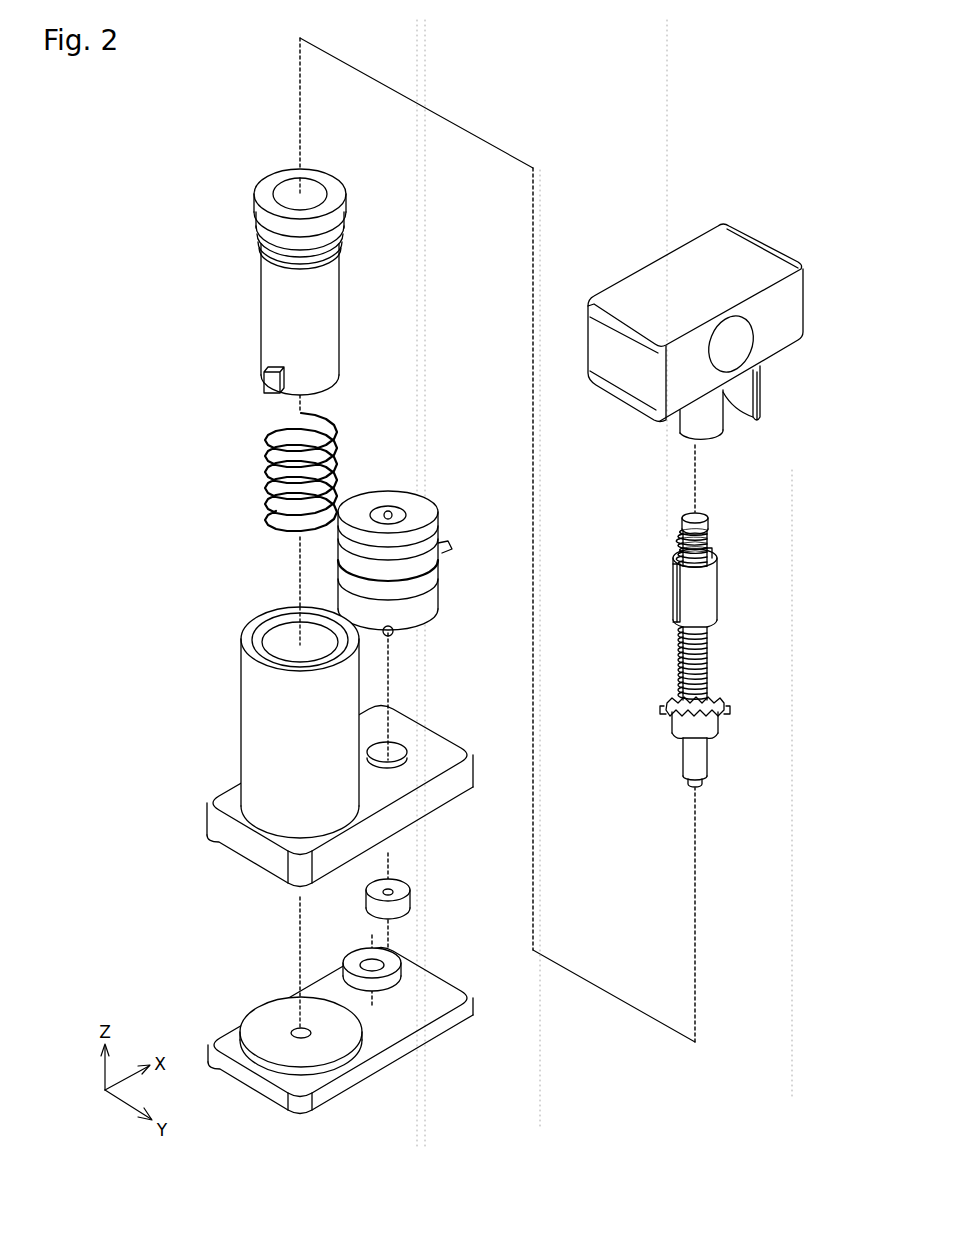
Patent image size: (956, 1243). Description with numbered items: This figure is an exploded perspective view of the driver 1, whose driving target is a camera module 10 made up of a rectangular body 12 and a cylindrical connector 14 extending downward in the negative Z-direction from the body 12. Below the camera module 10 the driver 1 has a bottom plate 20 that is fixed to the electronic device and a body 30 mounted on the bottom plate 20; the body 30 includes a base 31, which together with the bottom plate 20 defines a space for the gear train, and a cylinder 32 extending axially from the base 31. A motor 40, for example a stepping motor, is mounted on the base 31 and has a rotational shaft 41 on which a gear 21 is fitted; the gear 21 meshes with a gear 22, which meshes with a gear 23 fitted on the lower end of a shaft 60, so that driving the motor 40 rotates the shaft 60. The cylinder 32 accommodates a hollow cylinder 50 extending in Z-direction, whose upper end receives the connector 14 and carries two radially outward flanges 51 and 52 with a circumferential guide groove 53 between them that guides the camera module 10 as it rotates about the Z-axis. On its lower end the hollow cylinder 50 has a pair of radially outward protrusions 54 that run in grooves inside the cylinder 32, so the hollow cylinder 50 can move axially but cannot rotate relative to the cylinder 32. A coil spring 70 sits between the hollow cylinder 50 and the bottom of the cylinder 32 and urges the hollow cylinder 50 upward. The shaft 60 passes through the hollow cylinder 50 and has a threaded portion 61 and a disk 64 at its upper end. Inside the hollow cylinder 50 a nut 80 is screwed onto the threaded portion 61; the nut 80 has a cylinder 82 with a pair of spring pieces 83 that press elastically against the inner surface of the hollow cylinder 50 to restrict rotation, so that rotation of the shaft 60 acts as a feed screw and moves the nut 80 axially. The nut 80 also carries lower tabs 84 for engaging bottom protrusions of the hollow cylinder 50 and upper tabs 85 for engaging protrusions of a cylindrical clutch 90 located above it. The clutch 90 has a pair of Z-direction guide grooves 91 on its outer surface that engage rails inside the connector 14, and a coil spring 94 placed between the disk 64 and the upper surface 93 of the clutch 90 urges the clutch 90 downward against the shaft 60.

The driver 1 is at (796, 110).
The camera module 10 is at (708, 339).
The body 12 is at (656, 270).
The connector 14 is at (684, 440).
The bottom plate 20 is at (321, 1031).
The gear 21 is at (410, 888).
The gear 22 is at (400, 958).
The gear 23 is at (258, 1020).
The body 30 is at (294, 753).
The base 31 is at (238, 848).
The cylinder 32 is at (242, 712).
The motor 40 is at (403, 557).
The rotational shaft 41 is at (396, 635).
The hollow cylinder 50 is at (303, 307).
The flange 51 is at (262, 186).
The flange 52 is at (258, 232).
The guide groove 53 is at (362, 207).
The protrusions 54 is at (262, 396).
The shaft 60 is at (708, 663).
The threaded portion 61 is at (686, 654).
The disk 64 is at (702, 516).
The coil spring 70 is at (264, 482).
The nut 80 is at (708, 730).
The cylinder 82 is at (704, 764).
The spring pieces 83 is at (666, 712).
The lower tabs 84 is at (708, 740).
The upper tabs 85 is at (712, 700).
The clutch 90 is at (704, 563).
The guide grooves 91 is at (710, 550).
The upper surface 93 is at (678, 555).
The coil spring 94 is at (682, 534).